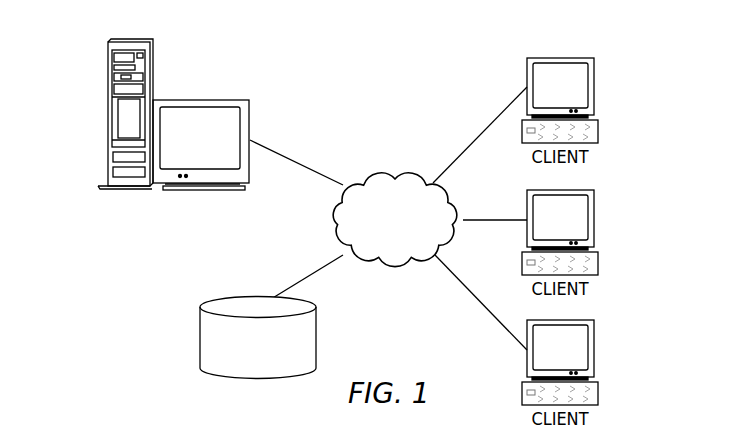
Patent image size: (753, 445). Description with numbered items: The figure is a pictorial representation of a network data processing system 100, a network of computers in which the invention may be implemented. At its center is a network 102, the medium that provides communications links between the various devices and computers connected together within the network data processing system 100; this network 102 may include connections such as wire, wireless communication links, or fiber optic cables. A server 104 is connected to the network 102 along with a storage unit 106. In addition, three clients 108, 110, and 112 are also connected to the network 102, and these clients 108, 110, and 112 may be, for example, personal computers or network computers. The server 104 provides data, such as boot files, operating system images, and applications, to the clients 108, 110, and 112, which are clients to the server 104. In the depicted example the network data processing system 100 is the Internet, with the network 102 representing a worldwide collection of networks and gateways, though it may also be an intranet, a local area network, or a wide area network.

The network data processing system 100 is at (459, 71).
The network 102 is at (370, 172).
The server 104 is at (108, 115).
The storage unit 106 is at (200, 337).
The client 108 is at (597, 86).
The client 110 is at (594, 219).
The client 112 is at (594, 352).